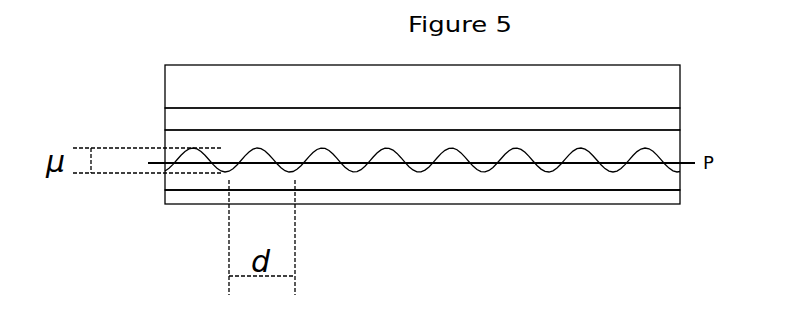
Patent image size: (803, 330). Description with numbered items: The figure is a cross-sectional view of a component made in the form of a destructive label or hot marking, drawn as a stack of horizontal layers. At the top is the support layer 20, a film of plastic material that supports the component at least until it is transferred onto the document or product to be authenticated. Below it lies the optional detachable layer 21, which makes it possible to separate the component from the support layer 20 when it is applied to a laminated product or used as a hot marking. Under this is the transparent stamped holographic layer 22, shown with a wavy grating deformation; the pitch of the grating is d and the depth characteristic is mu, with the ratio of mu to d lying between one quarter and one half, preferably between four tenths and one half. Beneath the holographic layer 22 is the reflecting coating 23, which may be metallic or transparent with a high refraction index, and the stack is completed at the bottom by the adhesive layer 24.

The support layer 20 is at (481, 100).
The detachable layer 21 is at (422, 120).
The stamped holographic layer 22 is at (358, 154).
The reflecting coating 23 is at (233, 190).
The adhesive layer 24 is at (481, 206).